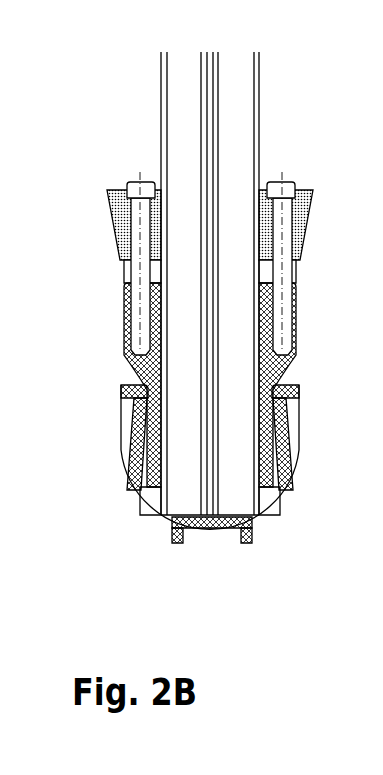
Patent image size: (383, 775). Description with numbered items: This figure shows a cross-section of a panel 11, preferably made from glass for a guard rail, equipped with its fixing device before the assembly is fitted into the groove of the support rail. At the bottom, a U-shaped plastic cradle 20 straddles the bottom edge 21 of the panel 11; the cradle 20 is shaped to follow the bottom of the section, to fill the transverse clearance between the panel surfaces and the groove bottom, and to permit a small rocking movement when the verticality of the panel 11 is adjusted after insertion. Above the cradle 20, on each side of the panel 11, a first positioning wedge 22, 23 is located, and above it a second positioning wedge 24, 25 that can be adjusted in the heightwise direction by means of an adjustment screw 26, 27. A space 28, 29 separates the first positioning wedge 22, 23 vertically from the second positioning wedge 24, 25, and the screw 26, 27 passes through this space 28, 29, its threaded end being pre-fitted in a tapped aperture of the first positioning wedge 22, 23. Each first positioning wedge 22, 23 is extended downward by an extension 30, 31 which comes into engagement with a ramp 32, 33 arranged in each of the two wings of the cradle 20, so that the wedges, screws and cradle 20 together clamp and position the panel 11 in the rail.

The panel 11 is at (237, 105).
The cradle 20 is at (277, 500).
The bottom edge 21 is at (176, 532).
The first positioning wedge 22 is at (128, 310).
The first positioning wedge 23 is at (295, 300).
The second positioning wedge 24 is at (115, 212).
The second positioning wedge 25 is at (300, 222).
The adjustment screw 26 is at (133, 188).
The adjustment screw 27 is at (291, 190).
The space 28 is at (125, 272).
The space 29 is at (293, 272).
The extension 30 is at (133, 397).
The extension 31 is at (300, 388).
The ramp 32 is at (137, 443).
The ramp 33 is at (283, 440).